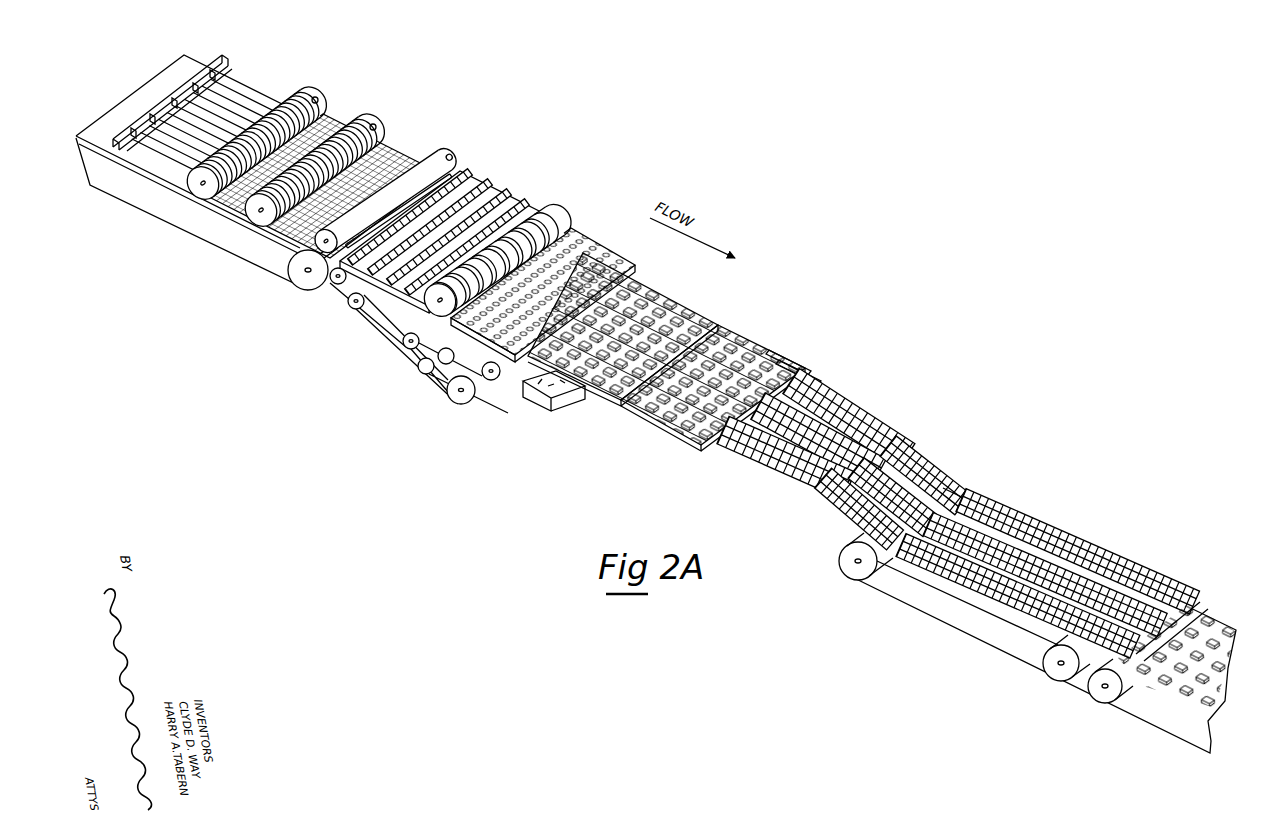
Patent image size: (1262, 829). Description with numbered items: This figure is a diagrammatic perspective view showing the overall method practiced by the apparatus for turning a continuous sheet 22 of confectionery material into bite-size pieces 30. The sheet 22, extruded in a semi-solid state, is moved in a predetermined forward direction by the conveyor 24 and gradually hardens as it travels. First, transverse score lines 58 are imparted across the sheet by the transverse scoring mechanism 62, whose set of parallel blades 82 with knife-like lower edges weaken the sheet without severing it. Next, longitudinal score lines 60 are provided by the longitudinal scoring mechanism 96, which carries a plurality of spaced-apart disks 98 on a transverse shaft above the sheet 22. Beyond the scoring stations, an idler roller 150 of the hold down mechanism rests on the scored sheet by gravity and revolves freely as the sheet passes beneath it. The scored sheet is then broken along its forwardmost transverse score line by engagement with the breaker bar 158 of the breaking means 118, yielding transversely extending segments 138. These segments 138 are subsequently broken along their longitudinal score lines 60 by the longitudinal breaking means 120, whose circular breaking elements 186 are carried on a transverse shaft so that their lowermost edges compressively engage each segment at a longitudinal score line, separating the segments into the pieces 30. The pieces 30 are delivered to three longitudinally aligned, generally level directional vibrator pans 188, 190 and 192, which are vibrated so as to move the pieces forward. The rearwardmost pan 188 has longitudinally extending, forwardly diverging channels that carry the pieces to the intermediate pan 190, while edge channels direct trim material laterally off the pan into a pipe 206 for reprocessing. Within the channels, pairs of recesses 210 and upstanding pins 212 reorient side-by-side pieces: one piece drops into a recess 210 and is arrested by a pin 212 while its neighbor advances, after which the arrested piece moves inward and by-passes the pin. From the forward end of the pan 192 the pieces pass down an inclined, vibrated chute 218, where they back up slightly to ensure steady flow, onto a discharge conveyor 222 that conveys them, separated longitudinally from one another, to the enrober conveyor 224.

The sheet 22 is at (196, 155).
The conveyor 24 is at (207, 214).
The pieces 30 is at (543, 283).
The transverse score lines 58 is at (334, 106).
The longitudinal score lines 60 is at (398, 184).
The transverse scoring mechanism 62 is at (200, 95).
The blades 82 is at (188, 87).
The longitudinal scoring mechanism 96 is at (326, 159).
The disks 98 is at (286, 145).
The breaking means 118 is at (444, 211).
The longitudinal breaking means 120 is at (482, 286).
The segments 138 is at (543, 269).
The idler roller 150 is at (392, 189).
The breaker bar 158 is at (439, 225).
The circular breaking elements 186 is at (497, 246).
The vibrator pan 188 is at (623, 329).
The vibrator pan 190 is at (713, 366).
The vibrator pan 192 is at (816, 419).
The pipe 206 is at (542, 403).
The recesses 210 is at (788, 339).
The pin 212 is at (801, 354).
The chute 218 is at (893, 477).
The discharge conveyor 222 is at (1037, 618).
The enrober conveyor 224 is at (1180, 636).